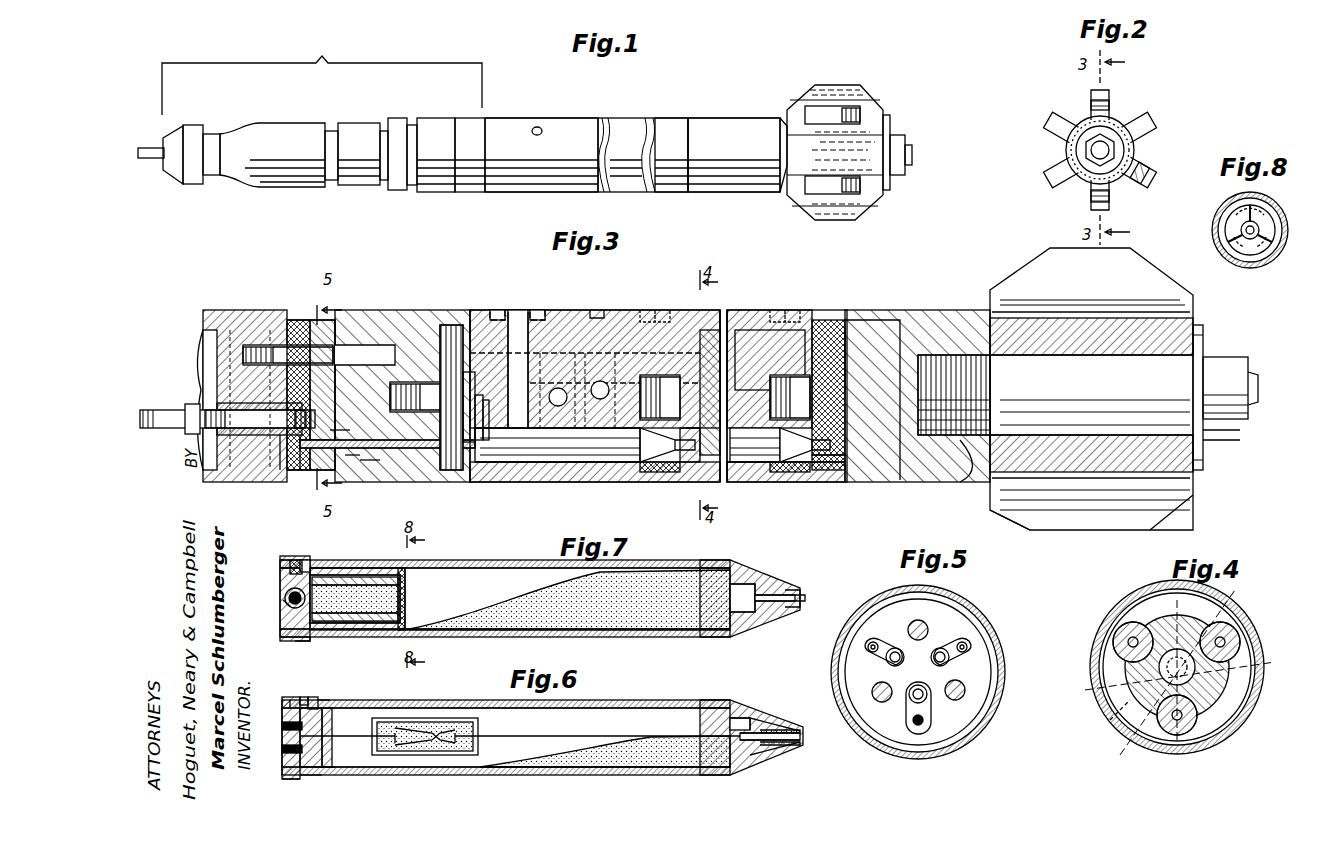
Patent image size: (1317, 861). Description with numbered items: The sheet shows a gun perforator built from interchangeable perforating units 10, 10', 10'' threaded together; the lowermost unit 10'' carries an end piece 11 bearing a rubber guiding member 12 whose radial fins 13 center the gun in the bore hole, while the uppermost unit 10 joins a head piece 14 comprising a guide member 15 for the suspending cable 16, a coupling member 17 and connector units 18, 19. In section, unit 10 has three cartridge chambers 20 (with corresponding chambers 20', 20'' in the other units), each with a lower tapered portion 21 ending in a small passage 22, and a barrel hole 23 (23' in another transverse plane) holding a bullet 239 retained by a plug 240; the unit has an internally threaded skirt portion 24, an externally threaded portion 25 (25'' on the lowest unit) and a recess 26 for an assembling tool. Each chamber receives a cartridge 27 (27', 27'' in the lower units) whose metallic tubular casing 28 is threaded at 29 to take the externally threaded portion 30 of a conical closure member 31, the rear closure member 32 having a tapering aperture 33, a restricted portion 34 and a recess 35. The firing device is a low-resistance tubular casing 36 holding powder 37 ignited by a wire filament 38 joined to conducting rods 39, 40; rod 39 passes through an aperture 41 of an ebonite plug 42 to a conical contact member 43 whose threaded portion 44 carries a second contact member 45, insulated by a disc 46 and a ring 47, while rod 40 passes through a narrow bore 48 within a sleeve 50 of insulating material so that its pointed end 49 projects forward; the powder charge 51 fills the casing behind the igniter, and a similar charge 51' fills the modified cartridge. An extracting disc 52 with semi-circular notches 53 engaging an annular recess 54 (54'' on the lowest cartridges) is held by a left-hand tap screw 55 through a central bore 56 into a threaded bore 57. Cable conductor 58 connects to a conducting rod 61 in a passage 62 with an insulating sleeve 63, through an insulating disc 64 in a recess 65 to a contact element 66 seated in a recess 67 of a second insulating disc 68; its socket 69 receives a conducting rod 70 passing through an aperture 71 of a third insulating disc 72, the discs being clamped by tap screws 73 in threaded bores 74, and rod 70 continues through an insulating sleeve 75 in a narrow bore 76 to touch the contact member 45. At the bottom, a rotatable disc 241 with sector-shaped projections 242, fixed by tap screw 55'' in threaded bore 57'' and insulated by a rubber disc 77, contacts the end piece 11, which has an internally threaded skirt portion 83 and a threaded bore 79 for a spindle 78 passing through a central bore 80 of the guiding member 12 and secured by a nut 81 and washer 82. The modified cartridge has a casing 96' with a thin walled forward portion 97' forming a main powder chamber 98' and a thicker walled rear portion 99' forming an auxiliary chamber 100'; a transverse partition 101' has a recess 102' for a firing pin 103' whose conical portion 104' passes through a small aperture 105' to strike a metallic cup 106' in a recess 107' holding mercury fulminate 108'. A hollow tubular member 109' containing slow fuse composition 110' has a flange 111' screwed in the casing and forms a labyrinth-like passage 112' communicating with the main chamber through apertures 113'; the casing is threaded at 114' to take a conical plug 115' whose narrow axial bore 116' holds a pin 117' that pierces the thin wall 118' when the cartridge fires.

In FIG. 1, the perforating unit 10 is at (598, 138).
In FIG. 1, the perforating unit 10' is at (560, 138).
In FIG. 3, the perforating unit 10' is at (614, 408).
In FIG. 1, the perforating unit 10'' is at (674, 138).
In FIG. 3, the perforating unit 10'' is at (787, 371).
In FIG. 1, the end piece 11 is at (722, 120).
In FIG. 3, the end piece 11 is at (922, 322).
In FIG. 1, the rubber guiding member 12 is at (838, 85).
In FIG. 2, the rubber guiding member 12 is at (1122, 98).
In FIG. 3, the rubber guiding member 12 is at (1025, 270).
In FIG. 1, the radial fins 13 is at (862, 106).
In FIG. 2, the radial fins 13 is at (1113, 150).
In FIG. 3, the radial fins 13 is at (1200, 495).
In FIG. 1, the head piece 14 is at (322, 75).
In FIG. 1, the guide member 15 is at (270, 128).
In FIG. 1, the cable 16 is at (160, 140).
In FIG. 1, the coupling member 17 is at (355, 125).
In FIG. 1, the connector unit 18 is at (430, 120).
In FIG. 3, the connector unit 18 is at (222, 312).
In FIG. 1, the connector unit 19 is at (462, 120).
In FIG. 3, the connector unit 19 is at (365, 322).
In FIG. 3, the cartridge chamber 20 is at (557, 400).
In FIG. 3, the bore 20' is at (688, 468).
In FIG. 3, the bore 20'' is at (794, 484).
In FIG. 3, the lower tapered portion 21 is at (655, 465).
In FIG. 3, the small passage 22 is at (680, 465).
In FIG. 3, the barrel hole 23 is at (558, 357).
In FIG. 4, the barrel hole 23 is at (1177, 663).
In FIG. 4, the passage 23' is at (1101, 726).
In FIG. 3, the internally threaded skirt portion 24 is at (418, 312).
In FIG. 3, the externally threaded portion 25 is at (660, 368).
In FIG. 3, the threads 25'' is at (807, 411).
In FIG. 3, the recess 26 is at (597, 310).
In FIG. 3, the cartridge 27 is at (557, 471).
In FIG. 6, the cartridge 27 is at (605, 725).
In FIG. 3, the cartridge 27' is at (751, 478).
In FIG. 3, the cartridge 27'' is at (777, 471).
In FIG. 6, the metallic tubular casing 28 is at (480, 708).
In FIG. 6, the internal thread 29 is at (705, 705).
In FIG. 6, the externally threaded portion 30 is at (738, 715).
In FIG. 6, the conical closure member 31 is at (760, 722).
In FIG. 3, the rear closure member 32 is at (465, 445).
In FIG. 6, the rear closure member 32 is at (314, 698).
In FIG. 6, the circular aperture 33 is at (322, 702).
In FIG. 6, the restricted portion 34 is at (304, 697).
In FIG. 6, the circular recess 35 is at (290, 722).
In FIG. 6, the tubular casing 36 is at (410, 718).
In FIG. 6, the powder 37 is at (438, 722).
In FIG. 6, the wire filament 38 is at (430, 755).
In FIG. 6, the conducting rod 39 is at (378, 755).
In FIG. 6, the conducting rod 40 is at (465, 755).
In FIG. 6, the aperture 41 is at (332, 768).
In FIG. 6, the ebonite plug 42 is at (332, 728).
In FIG. 6, the conical contact member 43 is at (308, 776).
In FIG. 6, the threaded portion 44 is at (287, 778).
In FIG. 6, the second contact member 45 is at (285, 748).
In FIG. 6, the insulating disc 46 is at (345, 712).
In FIG. 6, the ring of insulating material 47 is at (282, 722).
In FIG. 6, the narrow bore 48 is at (785, 745).
In FIG. 6, the pointed end 49 is at (802, 738).
In FIG. 6, the sleeve of insulating material 50 is at (778, 730).
In FIG. 6, the propellant charge 51 is at (506, 750).
In FIG. 7, the propellant charge 51' is at (505, 609).
In FIG. 3, the circular disc 52 is at (710, 330).
In FIG. 4, the circular disc 52 is at (1200, 625).
In FIG. 4, the semi-circular notches 53 is at (1222, 665).
In FIG. 6, the annular recess 54 is at (291, 683).
In FIG. 3, the contact 54'' is at (691, 476).
In FIG. 3, the tap screw 55 is at (770, 337).
In FIG. 4, the tap screw 55 is at (1162, 672).
In FIG. 3, the tap screw 55'' is at (874, 338).
In FIG. 3, the central bore 56 is at (752, 330).
In FIG. 3, the internally threaded bore 57 is at (634, 443).
In FIG. 3, the threaded bore 57'' is at (800, 352).
In FIG. 3, the conductor 58 is at (160, 407).
In FIG. 3, the conducting rod 61 is at (232, 470).
In FIG. 5, the conducting rod 61 is at (945, 650).
In FIG. 3, the passage 62 is at (225, 400).
In FIG. 3, the insulating sleeve 63 is at (258, 470).
In FIG. 3, the insulating disc 64 is at (282, 470).
In FIG. 3, the circular recess 65 is at (292, 320).
In FIG. 3, the contact element 66 is at (285, 470).
In FIG. 5, the contact element 66 is at (912, 722).
In FIG. 3, the recess 67 is at (328, 470).
In FIG. 5, the recess 67 is at (906, 716).
In FIG. 3, the second insulating disc 68 is at (328, 320).
In FIG. 5, the second insulating disc 68 is at (975, 652).
In FIG. 3, the socket 69 is at (305, 470).
In FIG. 5, the socket 69 is at (872, 652).
In FIG. 3, the conducting rod 70 is at (368, 480).
In FIG. 5, the conducting rod 70 is at (918, 730).
In FIG. 3, the aperture 71 is at (380, 450).
In FIG. 3, the third insulating disc 72 is at (350, 480).
In FIG. 3, the tap screws 73 is at (318, 320).
In FIG. 5, the tap screws 73 is at (940, 600).
In FIG. 3, the threaded bores 74 is at (262, 345).
In FIG. 3, the insulating sleeve 75 is at (400, 415).
In FIG. 3, the narrow bore 76 is at (445, 472).
In FIG. 3, the rubber disc 77 is at (826, 318).
In FIG. 1, the spindle 78 is at (912, 152).
In FIG. 3, the spindle 78 is at (1208, 340).
In FIG. 3, the threaded bore 79 is at (950, 495).
In FIG. 3, the central bore 80 is at (1208, 448).
In FIG. 1, the nut 81 is at (905, 145).
In FIG. 2, the nut 81 is at (1062, 150).
In FIG. 3, the nut 81 is at (1240, 385).
In FIG. 1, the washer 82 is at (888, 128).
In FIG. 2, the washer 82 is at (1092, 171).
In FIG. 3, the washer 82 is at (1205, 350).
In FIG. 3, the internally threaded skirt portion 83 is at (820, 470).
In FIG. 7, the tubular metallic casing 96' is at (505, 584).
In FIG. 7, the thin walled forward portion 97' is at (470, 584).
In FIG. 7, the main powder chamber 98' is at (567, 600).
In FIG. 7, the thicker walled rear portion 99' is at (357, 586).
In FIG. 7, the auxiliary chamber 100' is at (319, 591).
In FIG. 7, the transverse partition 101' is at (261, 550).
In FIG. 7, the circular recess 102' is at (262, 564).
In FIG. 7, the firing pin 103' is at (268, 586).
In FIG. 7, the conical portion 104' is at (270, 595).
In FIG. 7, the small aperture 105' is at (302, 553).
In FIG. 7, the metallic cup 106' is at (260, 617).
In FIG. 7, the recess 107' is at (275, 640).
In FIG. 7, the mercury fulminate disc 108' is at (322, 639).
In FIG. 7, the hollow tubular member 109' is at (387, 639).
In FIG. 7, the slow fuse composition 110' is at (386, 598).
In FIG. 7, the outwardly extending flange 111' is at (394, 582).
In FIG. 7, the labyrinth-like passage 112' is at (356, 639).
In FIG. 7, the apertures 113' is at (386, 595).
In FIG. 7, the internal thread 114' is at (750, 587).
In FIG. 7, the conical plug 115' is at (765, 578).
In FIG. 7, the narrow axial bore 116' is at (789, 581).
In FIG. 7, the pin 117' is at (823, 588).
In FIG. 7, the thin wall 118' is at (827, 595).
In FIG. 3, the bullets 239 is at (486, 445).
In FIG. 3, the plugs 240 is at (478, 445).
In FIG. 3, the circular rotatable disc 241 is at (848, 320).
In FIG. 3, the sector-shaped projections 242 is at (855, 480).